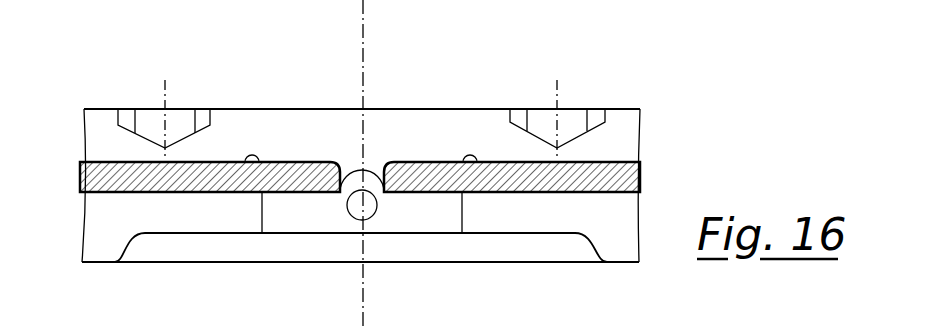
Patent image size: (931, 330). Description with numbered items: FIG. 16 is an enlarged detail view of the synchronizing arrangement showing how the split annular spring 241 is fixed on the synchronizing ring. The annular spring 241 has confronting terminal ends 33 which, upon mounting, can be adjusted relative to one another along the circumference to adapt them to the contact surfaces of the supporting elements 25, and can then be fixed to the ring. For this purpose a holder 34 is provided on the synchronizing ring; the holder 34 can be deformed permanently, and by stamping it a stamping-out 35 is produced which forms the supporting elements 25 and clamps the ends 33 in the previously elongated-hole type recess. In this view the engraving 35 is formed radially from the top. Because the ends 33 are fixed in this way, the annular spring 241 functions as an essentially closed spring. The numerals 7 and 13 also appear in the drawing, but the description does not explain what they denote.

The housing body 7 is at (252, 122).
The conical recess 13 is at (570, 122).
The split annular spring 241 is at (622, 175).
The open ends of the annular spring 33 is at (383, 164).
The stamping-out 35 is at (364, 207).
The supporting elements 25 is at (428, 222).
The holder 34 is at (303, 233).